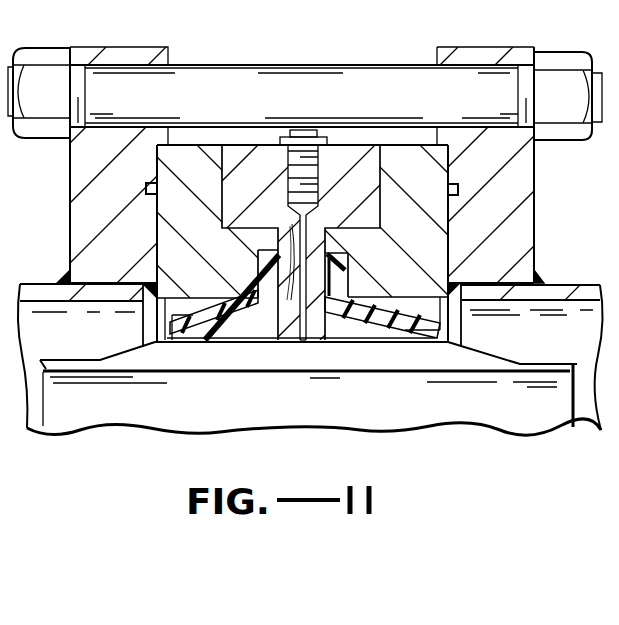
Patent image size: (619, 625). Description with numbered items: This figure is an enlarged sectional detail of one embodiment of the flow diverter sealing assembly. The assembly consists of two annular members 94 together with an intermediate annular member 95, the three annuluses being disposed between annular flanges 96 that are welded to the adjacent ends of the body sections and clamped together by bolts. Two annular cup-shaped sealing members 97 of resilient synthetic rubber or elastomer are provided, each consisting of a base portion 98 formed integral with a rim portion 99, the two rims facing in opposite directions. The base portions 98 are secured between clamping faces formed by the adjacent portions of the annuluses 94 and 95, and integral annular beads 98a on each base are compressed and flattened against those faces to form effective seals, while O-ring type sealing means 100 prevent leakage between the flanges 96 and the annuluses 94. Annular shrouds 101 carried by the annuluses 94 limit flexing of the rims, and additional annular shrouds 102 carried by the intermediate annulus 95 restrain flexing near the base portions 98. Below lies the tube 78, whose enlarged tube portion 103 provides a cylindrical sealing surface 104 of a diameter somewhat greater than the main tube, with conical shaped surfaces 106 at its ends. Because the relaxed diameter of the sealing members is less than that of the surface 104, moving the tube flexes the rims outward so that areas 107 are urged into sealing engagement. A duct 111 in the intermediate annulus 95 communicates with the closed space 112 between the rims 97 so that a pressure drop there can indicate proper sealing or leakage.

The tube 78 is at (63, 360).
The annular members 94 is at (183, 162).
The intermediate annular member 95 is at (253, 160).
The annular flanges 96 is at (82, 183).
The annular cup-shaped sealing members 97 is at (188, 338).
The base portion 98 is at (245, 250).
The annular beads 98a is at (293, 226).
The rim portion 99 is at (240, 314).
The sealing means 100 is at (147, 184).
The annular shrouds 101 is at (173, 340).
The additional annular shrouds 102 is at (267, 330).
The tube portion 103 is at (418, 345).
The cylindrical sealing surfaces 104 is at (255, 320).
The conical shaped surfaces 106 is at (134, 352).
The areas 107 is at (213, 322).
The duct 111 is at (312, 228).
The closed space 112 is at (301, 347).